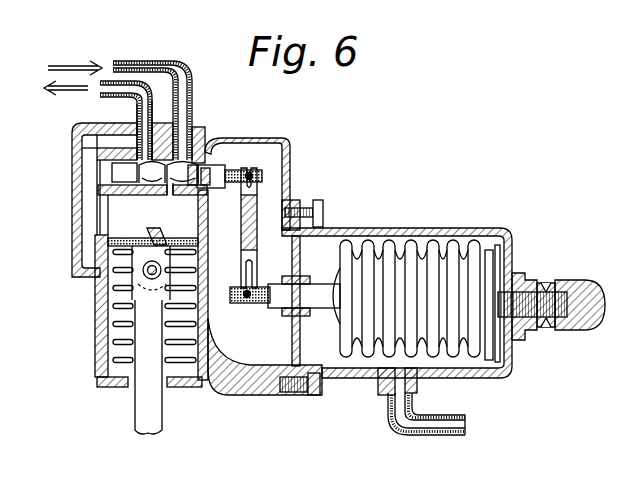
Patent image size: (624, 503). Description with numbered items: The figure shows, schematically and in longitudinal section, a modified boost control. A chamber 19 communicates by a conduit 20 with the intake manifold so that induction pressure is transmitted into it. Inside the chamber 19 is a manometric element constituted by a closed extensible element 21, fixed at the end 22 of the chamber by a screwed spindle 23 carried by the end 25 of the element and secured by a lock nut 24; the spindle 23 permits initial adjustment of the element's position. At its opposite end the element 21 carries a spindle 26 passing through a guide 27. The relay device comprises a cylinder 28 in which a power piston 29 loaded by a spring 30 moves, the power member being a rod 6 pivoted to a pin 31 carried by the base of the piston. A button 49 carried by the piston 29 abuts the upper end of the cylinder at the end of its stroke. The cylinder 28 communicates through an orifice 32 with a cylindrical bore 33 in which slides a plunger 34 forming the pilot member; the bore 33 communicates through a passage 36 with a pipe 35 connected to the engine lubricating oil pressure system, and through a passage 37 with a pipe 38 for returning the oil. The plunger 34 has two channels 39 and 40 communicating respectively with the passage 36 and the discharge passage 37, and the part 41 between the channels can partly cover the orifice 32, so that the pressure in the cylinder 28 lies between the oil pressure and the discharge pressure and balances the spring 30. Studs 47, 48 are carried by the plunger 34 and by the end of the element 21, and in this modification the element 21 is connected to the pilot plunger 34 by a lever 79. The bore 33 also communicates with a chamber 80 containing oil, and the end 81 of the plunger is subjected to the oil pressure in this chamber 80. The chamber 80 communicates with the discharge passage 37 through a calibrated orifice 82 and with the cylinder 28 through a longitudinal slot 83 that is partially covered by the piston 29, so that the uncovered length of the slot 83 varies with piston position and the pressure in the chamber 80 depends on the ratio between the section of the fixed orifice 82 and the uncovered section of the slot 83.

The rod 6 is at (142, 403).
The chamber 19 is at (482, 370).
The conduit 20 is at (435, 426).
The closed extensible element 21 is at (411, 250).
The end of the chamber 22 is at (515, 278).
The screwed spindle 23 is at (552, 287).
The lock nut 24 is at (531, 323).
The end of the element 25 is at (515, 353).
The spindle 26 is at (318, 300).
The guide 27 is at (299, 278).
The cylinder 28 is at (205, 225).
The power piston 29 is at (100, 278).
The spring 30 is at (128, 315).
The pin 31 is at (107, 287).
The orifice 32 is at (165, 184).
The cylindrical bore 33 is at (122, 172).
The plunger 34 is at (207, 175).
The pipe 35 is at (146, 68).
The passage 36 is at (202, 158).
The passage 37 is at (130, 147).
The pipe 38 is at (110, 90).
The channel 39 is at (178, 184).
The channel 40 is at (143, 181).
The part of the plunger 41 is at (110, 181).
The stud 47 is at (252, 175).
The stud 48 is at (247, 298).
The button 49 is at (107, 235).
The lever 79 is at (253, 210).
The chamber 80 is at (87, 212).
The end of the plunger 81 is at (113, 167).
The calibrated orifice 82 is at (133, 140).
The longitudinal slot 83 is at (100, 227).